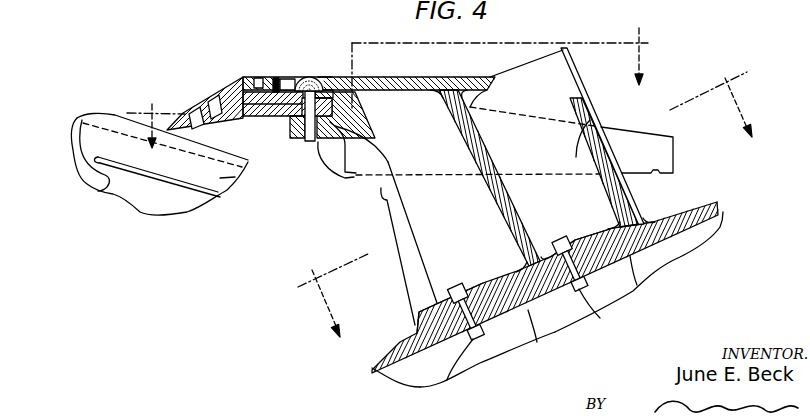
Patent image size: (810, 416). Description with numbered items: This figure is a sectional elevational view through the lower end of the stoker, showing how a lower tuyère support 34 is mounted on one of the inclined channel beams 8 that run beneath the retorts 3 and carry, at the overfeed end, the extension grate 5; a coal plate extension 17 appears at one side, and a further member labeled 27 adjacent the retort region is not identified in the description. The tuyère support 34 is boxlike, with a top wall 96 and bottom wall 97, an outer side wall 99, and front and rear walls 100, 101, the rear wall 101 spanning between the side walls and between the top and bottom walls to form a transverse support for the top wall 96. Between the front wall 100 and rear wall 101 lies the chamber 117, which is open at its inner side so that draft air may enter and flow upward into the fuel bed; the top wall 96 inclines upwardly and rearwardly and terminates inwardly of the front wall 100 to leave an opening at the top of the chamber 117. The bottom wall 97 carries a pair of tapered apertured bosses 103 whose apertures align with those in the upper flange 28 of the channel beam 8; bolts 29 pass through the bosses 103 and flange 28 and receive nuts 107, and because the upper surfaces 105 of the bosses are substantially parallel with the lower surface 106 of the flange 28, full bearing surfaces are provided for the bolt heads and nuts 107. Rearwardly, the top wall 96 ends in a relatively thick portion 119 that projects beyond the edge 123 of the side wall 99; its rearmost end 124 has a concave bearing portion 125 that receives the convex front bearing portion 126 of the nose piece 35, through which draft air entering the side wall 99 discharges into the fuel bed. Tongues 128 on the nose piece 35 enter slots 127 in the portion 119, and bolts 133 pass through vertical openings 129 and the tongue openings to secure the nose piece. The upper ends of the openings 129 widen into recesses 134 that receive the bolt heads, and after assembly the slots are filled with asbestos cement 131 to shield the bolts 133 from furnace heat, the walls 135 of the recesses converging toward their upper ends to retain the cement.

The retort 3 is at (396, 77).
The extension grate 5 is at (235, 178).
The inclined channel beam 8 is at (407, 373).
The coal plate extension 17 is at (665, 153).
The leading edge wing member 27 is at (93, 181).
The upper flange 28 is at (637, 283).
The bolt 29 is at (460, 285).
The lower tuyère support 34 is at (572, 50).
The nose piece 35 is at (244, 82).
The top wall 96 is at (400, 77).
The bottom wall 97 is at (448, 380).
The outer side wall 99 is at (418, 230).
The front wall 100 is at (582, 72).
The rear wall 101 is at (487, 166).
The tapered apertured boss 103 is at (578, 238).
The upper surface of boss 105 is at (417, 312).
The lower surface of flange 106 is at (537, 342).
The nut 107 is at (601, 314).
The chamber 117 is at (595, 118).
The rearwardly disposed portion 119 is at (337, 90).
The rearwardly disposed edge 123 is at (386, 203).
The rearmost end 124 is at (290, 132).
The concave bearing portion 125 is at (276, 110).
The convex front bearing portion 126 is at (281, 78).
The slot 127 is at (382, 153).
The tongue 128 is at (370, 112).
The vertical opening 129 is at (352, 179).
The asbestos cement 131 is at (325, 78).
The bolt 133 is at (312, 143).
The enlarged recess 134 is at (333, 106).
The recess wall 135 is at (298, 77).